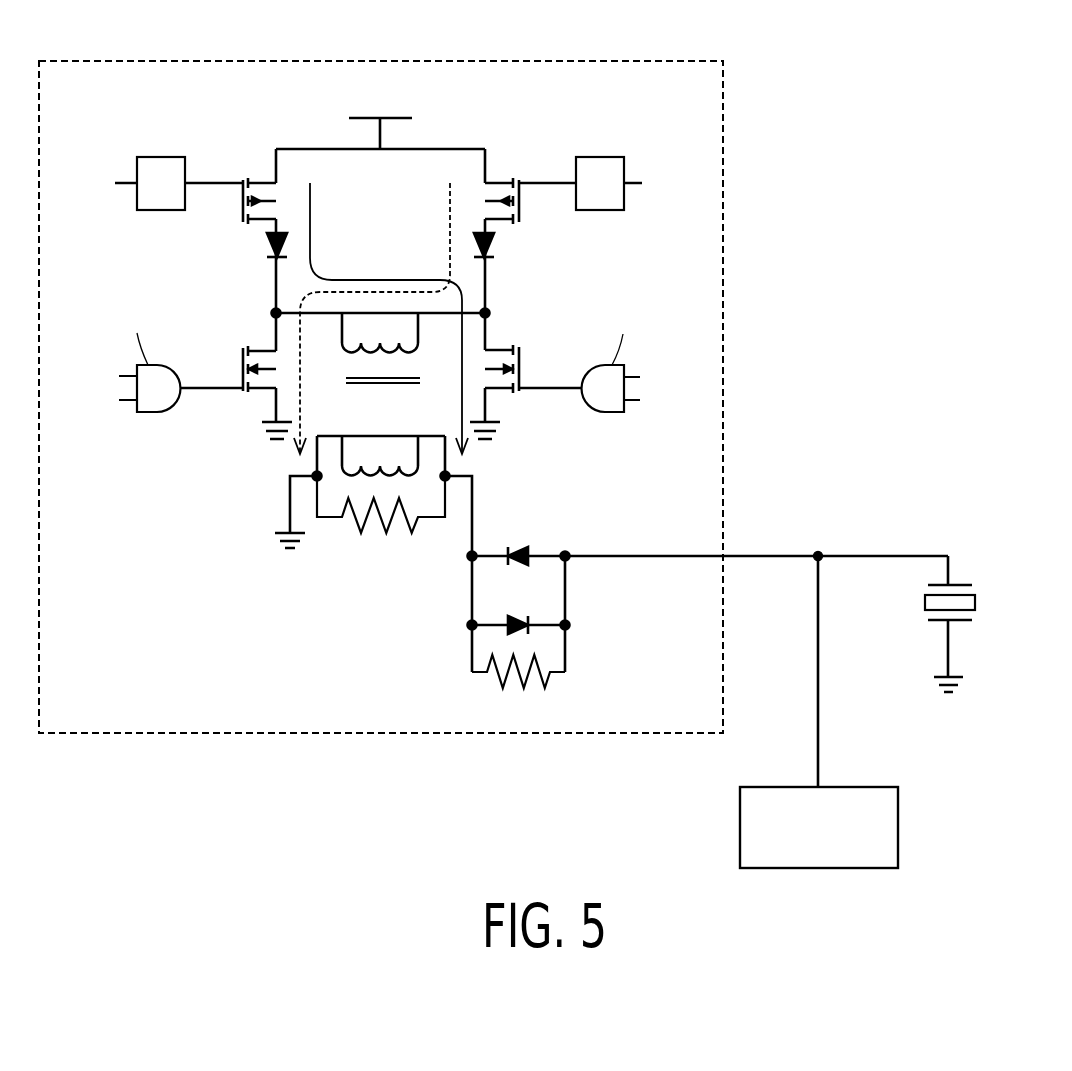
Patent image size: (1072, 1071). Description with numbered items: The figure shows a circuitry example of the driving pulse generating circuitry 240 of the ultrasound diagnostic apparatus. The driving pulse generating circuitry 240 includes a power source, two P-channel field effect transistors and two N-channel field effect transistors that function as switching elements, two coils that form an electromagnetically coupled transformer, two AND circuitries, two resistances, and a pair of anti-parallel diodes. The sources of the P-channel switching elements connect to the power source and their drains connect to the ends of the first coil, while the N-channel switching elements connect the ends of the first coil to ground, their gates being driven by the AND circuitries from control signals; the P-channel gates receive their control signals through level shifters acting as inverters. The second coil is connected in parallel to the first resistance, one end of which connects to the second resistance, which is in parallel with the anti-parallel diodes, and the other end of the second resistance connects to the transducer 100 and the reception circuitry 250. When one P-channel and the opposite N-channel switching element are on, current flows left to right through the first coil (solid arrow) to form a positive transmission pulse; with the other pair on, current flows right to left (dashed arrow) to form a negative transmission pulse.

The driving pulse generating circuitry 240 is at (640, 61).
The transducer 100 is at (975, 603).
The reception circuitry 250 is at (858, 787).